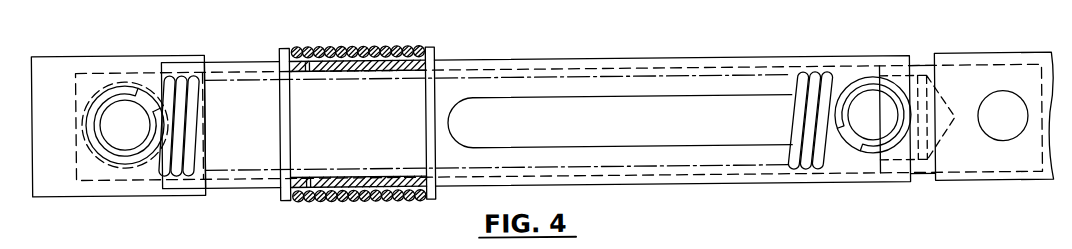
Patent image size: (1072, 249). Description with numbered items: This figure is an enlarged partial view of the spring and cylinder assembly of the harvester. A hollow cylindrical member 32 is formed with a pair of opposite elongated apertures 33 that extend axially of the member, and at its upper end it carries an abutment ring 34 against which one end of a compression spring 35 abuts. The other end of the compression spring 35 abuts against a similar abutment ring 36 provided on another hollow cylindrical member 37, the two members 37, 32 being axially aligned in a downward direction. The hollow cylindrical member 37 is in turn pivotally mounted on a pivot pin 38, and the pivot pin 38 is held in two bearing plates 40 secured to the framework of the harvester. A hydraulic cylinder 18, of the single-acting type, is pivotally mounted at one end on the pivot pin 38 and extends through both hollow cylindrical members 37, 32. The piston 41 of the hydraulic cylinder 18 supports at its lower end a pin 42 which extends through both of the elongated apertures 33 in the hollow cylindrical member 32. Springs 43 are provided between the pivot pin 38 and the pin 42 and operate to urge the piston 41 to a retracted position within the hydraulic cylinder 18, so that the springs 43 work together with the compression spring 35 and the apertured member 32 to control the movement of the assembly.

The hydraulic cylinder 18 is at (76, 124).
The hollow cylindrical member 32 is at (535, 59).
The elongated apertures 33 is at (731, 147).
The abutment ring 34 is at (437, 47).
The compression spring 35 is at (334, 46).
The abutment ring 36 is at (286, 46).
The hollow cylindrical member 37 is at (208, 59).
The pivot pin 38 is at (143, 96).
The bearing plates 40 is at (62, 52).
The piston 41 is at (847, 82).
The pin 42 is at (853, 136).
The springs 43 is at (167, 77).